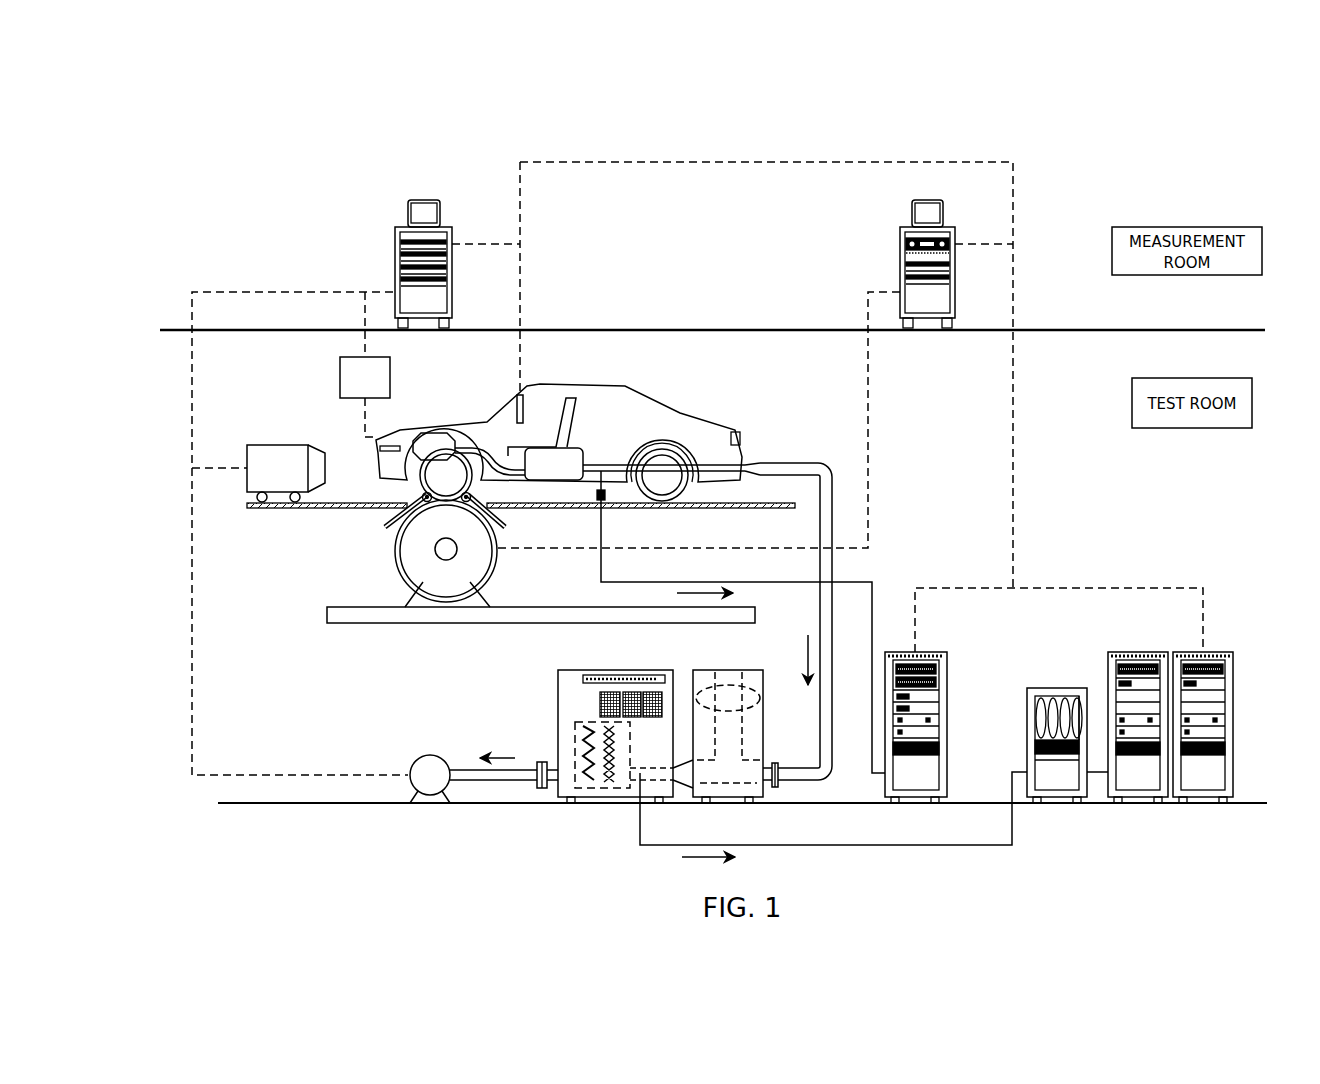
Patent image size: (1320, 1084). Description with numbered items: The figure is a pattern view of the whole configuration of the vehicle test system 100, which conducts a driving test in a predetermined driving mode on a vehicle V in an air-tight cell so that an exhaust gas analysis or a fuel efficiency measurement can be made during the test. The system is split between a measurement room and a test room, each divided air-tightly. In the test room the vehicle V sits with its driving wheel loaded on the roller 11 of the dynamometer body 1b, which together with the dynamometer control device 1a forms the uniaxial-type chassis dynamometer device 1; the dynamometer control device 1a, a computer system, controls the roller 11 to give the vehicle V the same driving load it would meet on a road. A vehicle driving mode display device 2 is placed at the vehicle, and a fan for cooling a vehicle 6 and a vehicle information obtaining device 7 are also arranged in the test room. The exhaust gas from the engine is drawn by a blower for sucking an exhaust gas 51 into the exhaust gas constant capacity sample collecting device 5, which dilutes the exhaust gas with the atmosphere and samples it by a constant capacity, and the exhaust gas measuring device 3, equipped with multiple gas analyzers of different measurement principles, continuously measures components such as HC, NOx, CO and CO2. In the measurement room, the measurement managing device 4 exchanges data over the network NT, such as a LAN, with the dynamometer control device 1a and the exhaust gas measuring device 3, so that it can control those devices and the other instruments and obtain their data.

The vehicle test system 100 is at (1078, 163).
The chassis dynamometer device 1 is at (383, 545).
The dynamometer control device 1a is at (900, 238).
The dynamometer body 1b is at (413, 562).
The roller 11 is at (495, 562).
The vehicle driving mode display device 2 is at (512, 410).
The exhaust gas measuring device 3 is at (1006, 625).
The measurement managing device 4 is at (393, 263).
The exhaust gas constant capacity sample collecting device 5 is at (540, 698).
The blower for sucking an exhaust gas 51 is at (423, 757).
The fan for cooling a vehicle 6 is at (258, 445).
The vehicle information obtaining device 7 is at (338, 377).
The vehicle V is at (697, 413).
The network NT is at (994, 400).